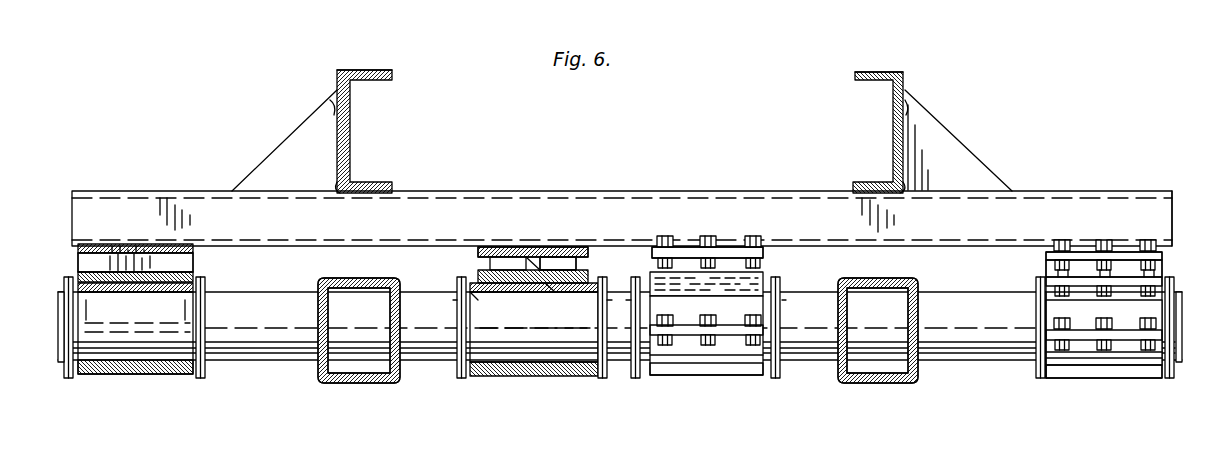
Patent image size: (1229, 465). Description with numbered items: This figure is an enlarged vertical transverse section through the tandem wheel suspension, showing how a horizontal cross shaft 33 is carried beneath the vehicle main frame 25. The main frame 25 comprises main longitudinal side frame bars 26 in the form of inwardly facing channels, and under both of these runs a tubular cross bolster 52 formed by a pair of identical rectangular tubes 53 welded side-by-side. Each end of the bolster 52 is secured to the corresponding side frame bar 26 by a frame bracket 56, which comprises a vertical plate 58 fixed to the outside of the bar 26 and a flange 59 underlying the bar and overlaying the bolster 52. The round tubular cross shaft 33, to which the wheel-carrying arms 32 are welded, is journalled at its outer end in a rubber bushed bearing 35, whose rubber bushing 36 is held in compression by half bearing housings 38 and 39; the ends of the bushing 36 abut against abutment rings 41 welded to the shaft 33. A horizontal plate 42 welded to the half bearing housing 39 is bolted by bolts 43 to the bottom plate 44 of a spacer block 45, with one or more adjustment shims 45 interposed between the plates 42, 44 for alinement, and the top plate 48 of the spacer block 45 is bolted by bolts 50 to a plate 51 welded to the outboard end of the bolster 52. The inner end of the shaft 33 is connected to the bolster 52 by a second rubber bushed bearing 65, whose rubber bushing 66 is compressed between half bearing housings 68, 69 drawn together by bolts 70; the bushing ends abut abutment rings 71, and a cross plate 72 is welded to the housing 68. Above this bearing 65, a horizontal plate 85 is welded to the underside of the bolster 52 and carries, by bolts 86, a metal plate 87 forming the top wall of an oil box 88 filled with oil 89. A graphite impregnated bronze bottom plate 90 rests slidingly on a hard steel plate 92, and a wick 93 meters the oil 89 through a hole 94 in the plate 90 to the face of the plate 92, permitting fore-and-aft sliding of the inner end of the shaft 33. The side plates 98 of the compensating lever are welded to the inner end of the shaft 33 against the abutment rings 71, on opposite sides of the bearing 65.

The main frame 25 is at (905, 67).
The main longitudinal side frame bar 26 is at (365, 70).
The arm 32 is at (356, 383).
The cross shaft 33 is at (258, 356).
The bearing 35 is at (171, 343).
The rubber bushing 36 is at (158, 378).
The half bearing housing 38 is at (97, 293).
The half bearing housing 39 is at (128, 378).
The abutment ring 41 is at (68, 317).
The horizontal plate 42 is at (180, 290).
The bolt 43 is at (1058, 296).
The bottom plate 44 is at (165, 283).
The spacer block 45 is at (100, 265).
The top plate 48 is at (1162, 258).
The bolt 50 is at (1172, 228).
The plate 51 is at (1155, 243).
The tubular cross bolster 52 is at (643, 152).
The tube 53 is at (398, 195).
The frame bracket 56 is at (250, 140).
The vertical plate 58 is at (333, 115).
The flange 59 is at (355, 193).
The bearing 65 is at (609, 290).
The rubber bushing 66 is at (528, 378).
The half bearing housing 68 is at (478, 297).
The half bearing housing 69 is at (500, 380).
The bolt 70 is at (710, 350).
The abutment ring 71 is at (462, 380).
The cross plate 72 is at (520, 293).
The horizontal plate 85 is at (515, 262).
The bolt 86 is at (668, 240).
The metal plate 87 is at (560, 266).
The oil box 88 is at (452, 263).
The oil 89 is at (490, 272).
The bottom plate 90 is at (570, 262).
The hard steel plate 92 is at (546, 291).
The wick 93 is at (507, 268).
The hole 94 is at (555, 262).
The side plate 98 is at (460, 380).